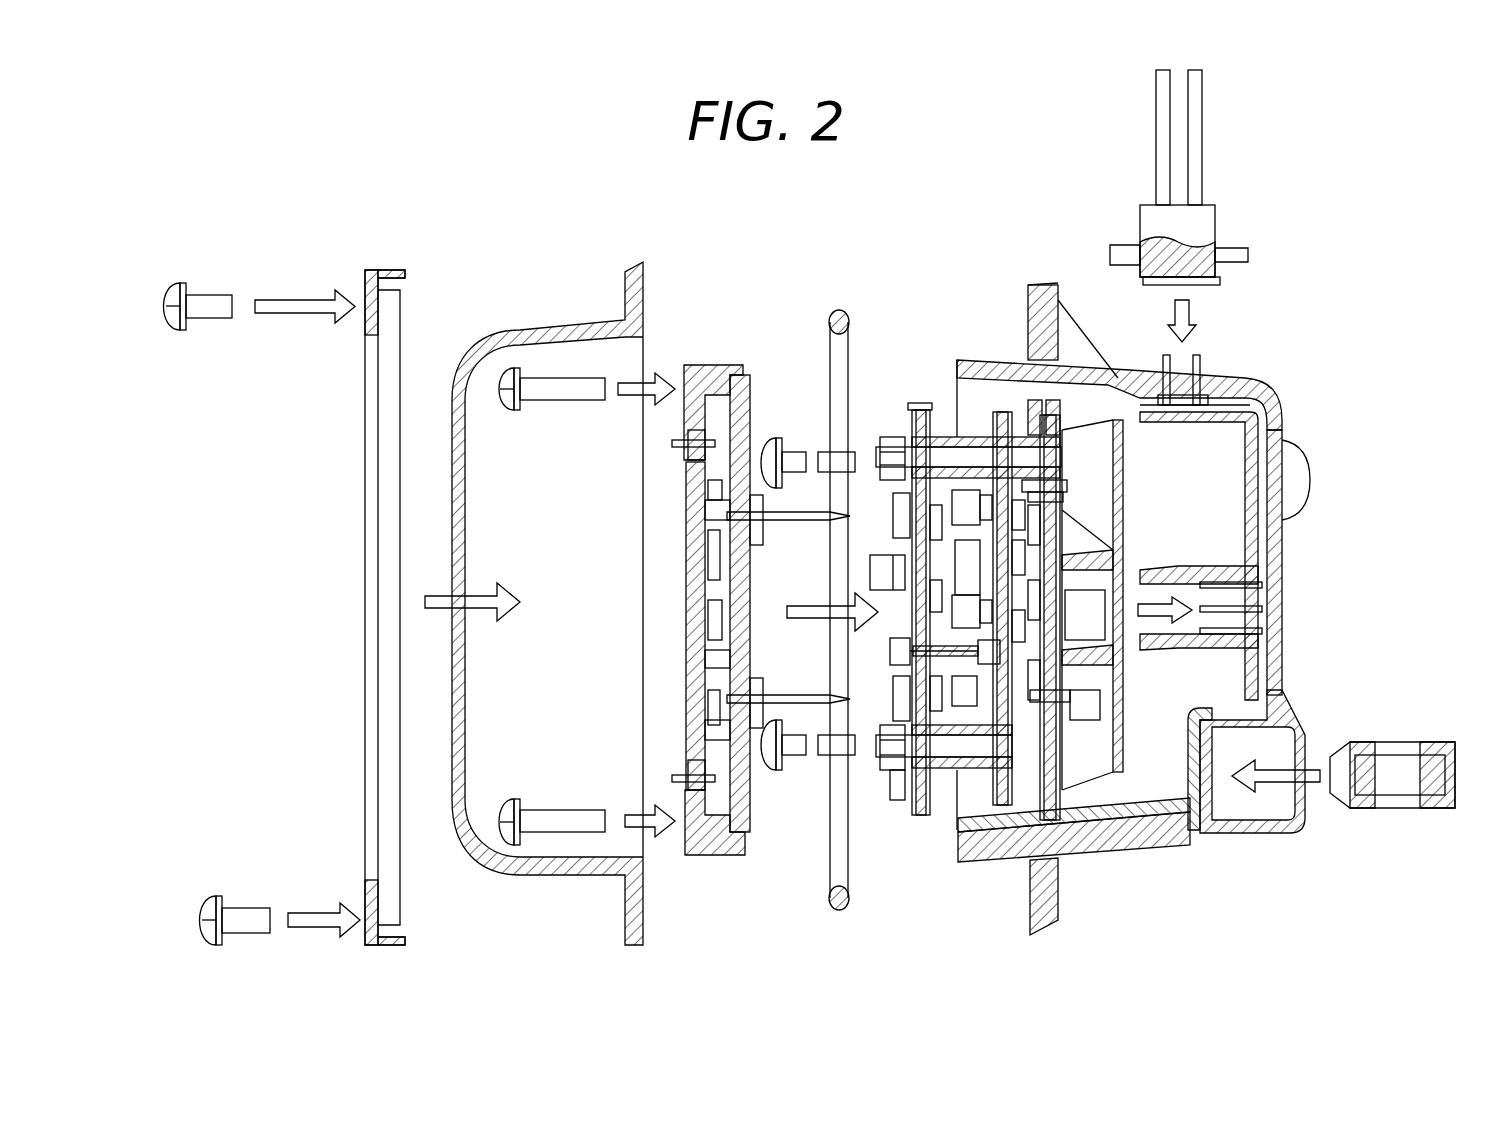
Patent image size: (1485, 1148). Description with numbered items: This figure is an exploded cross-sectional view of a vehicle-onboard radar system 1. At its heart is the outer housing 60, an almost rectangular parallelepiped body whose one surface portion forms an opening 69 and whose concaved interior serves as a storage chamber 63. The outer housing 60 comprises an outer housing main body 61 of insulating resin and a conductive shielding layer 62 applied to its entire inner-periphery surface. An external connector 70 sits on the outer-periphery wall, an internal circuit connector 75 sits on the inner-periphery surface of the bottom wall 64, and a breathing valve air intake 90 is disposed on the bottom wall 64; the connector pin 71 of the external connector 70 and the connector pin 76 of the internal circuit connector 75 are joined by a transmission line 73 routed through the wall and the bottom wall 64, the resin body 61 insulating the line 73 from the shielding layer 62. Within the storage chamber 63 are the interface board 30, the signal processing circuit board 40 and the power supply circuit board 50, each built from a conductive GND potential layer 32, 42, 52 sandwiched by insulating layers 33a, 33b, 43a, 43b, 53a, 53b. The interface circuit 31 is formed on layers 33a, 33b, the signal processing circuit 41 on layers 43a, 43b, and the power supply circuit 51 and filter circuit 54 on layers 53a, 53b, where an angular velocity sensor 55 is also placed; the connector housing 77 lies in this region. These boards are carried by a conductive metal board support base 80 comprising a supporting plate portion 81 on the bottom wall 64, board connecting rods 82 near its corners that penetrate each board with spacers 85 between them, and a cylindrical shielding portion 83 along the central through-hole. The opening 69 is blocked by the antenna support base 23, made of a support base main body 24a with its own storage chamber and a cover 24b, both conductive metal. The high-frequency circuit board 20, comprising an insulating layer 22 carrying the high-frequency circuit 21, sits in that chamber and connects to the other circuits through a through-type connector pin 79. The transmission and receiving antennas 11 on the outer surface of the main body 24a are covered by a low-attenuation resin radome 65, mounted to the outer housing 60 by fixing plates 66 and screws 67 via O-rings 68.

The sensor device 1 is at (1316, 826).
The transmission and receiving antenna 11 is at (692, 650).
The high-frequency circuit board 20 is at (630, 610).
The high-frequency circuit 21 is at (656, 660).
The insulating layer 22 is at (690, 485).
The antenna support base 23 is at (675, 651).
The support base main body 24a is at (686, 855).
The cover 24b is at (746, 832).
The interface board 30 is at (957, 669).
The interface circuit 31 is at (897, 792).
The GND potential layer 32 is at (916, 818).
The insulating layer 33a is at (912, 818).
The insulating layer 33b is at (976, 772).
The signal processing circuit board 40 is at (1124, 832).
The signal processing circuit 41 is at (1064, 896).
The GND potential layer 42 is at (1112, 845).
The insulating layer 43a is at (1096, 845).
The insulating layer 43b is at (1192, 835).
The power supply circuit board 50 is at (1001, 333).
The power supply circuit 51 is at (1100, 400).
The GND potential layer 52 is at (1045, 470).
The insulating layer 53a is at (1030, 470).
The insulating layer 53b is at (1062, 450).
The filter circuit 54 is at (1000, 662).
The angular velocity sensor 55 is at (1100, 560).
The outer housing 60 is at (1128, 513).
The outer housing main body 61 is at (1262, 378).
The shielding layer 62 is at (1265, 420).
The storage chamber 63 is at (1226, 466).
The bottom wall 64 is at (1282, 668).
The radome 65 is at (520, 340).
The fixing plate 66 is at (365, 556).
The screw 67 is at (177, 283).
The O-ring 68 is at (830, 320).
The opening 69 is at (957, 400).
The external connector 70 is at (1215, 375).
The connector pin 71 is at (1202, 360).
The transmission line 73 is at (1270, 515).
The internal circuit connector 75 is at (1195, 575).
The connector pin 76 is at (1270, 628).
The connector housing 77 is at (1080, 625).
The through-type connector pin 79 is at (786, 522).
The board support base 80 is at (1124, 450).
The supporting plate portion 81 is at (1110, 715).
The board connecting rod 82 is at (888, 440).
The cylindrical shielding portion 83 is at (1085, 676).
The spacer 85 is at (1203, 122).
The breathing valve air intake 90 is at (1400, 815).